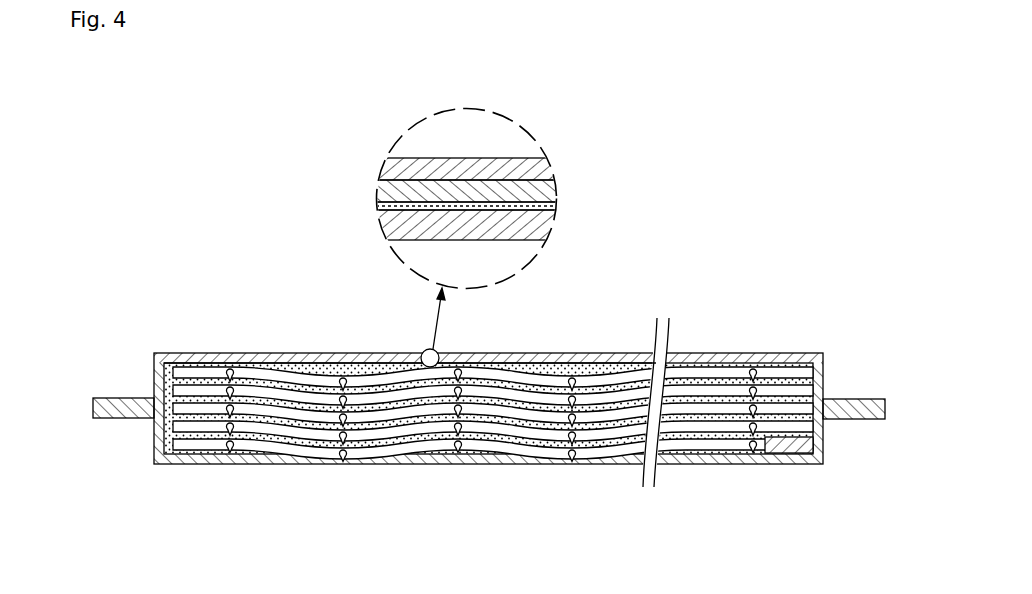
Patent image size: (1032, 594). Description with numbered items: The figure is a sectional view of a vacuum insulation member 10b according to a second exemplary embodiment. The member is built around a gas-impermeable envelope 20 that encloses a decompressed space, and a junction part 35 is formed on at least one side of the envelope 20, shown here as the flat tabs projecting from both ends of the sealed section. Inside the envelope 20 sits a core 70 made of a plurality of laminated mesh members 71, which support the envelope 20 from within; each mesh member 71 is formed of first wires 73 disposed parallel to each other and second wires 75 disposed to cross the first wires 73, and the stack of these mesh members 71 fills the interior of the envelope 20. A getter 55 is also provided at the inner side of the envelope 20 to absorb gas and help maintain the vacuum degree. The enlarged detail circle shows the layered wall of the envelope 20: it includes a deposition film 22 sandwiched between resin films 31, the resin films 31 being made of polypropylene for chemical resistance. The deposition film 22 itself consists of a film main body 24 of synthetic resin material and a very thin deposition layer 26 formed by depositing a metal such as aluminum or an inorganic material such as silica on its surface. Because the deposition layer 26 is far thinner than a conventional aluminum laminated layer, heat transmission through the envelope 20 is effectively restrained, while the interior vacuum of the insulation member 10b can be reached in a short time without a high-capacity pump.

The vacuum insulation material 10b is at (210, 285).
The envelope 20 is at (253, 354).
The junction part 35 is at (121, 397).
The deposition film 22 is at (627, 163).
The film main body 24 is at (549, 192).
The deposition layer 26 is at (553, 207).
The resin film 31 is at (466, 166).
The core 70 is at (708, 270).
The mesh member 71 is at (735, 378).
The first wire 73 is at (515, 428).
The second wire 75 is at (572, 437).
The getter 55 is at (789, 452).